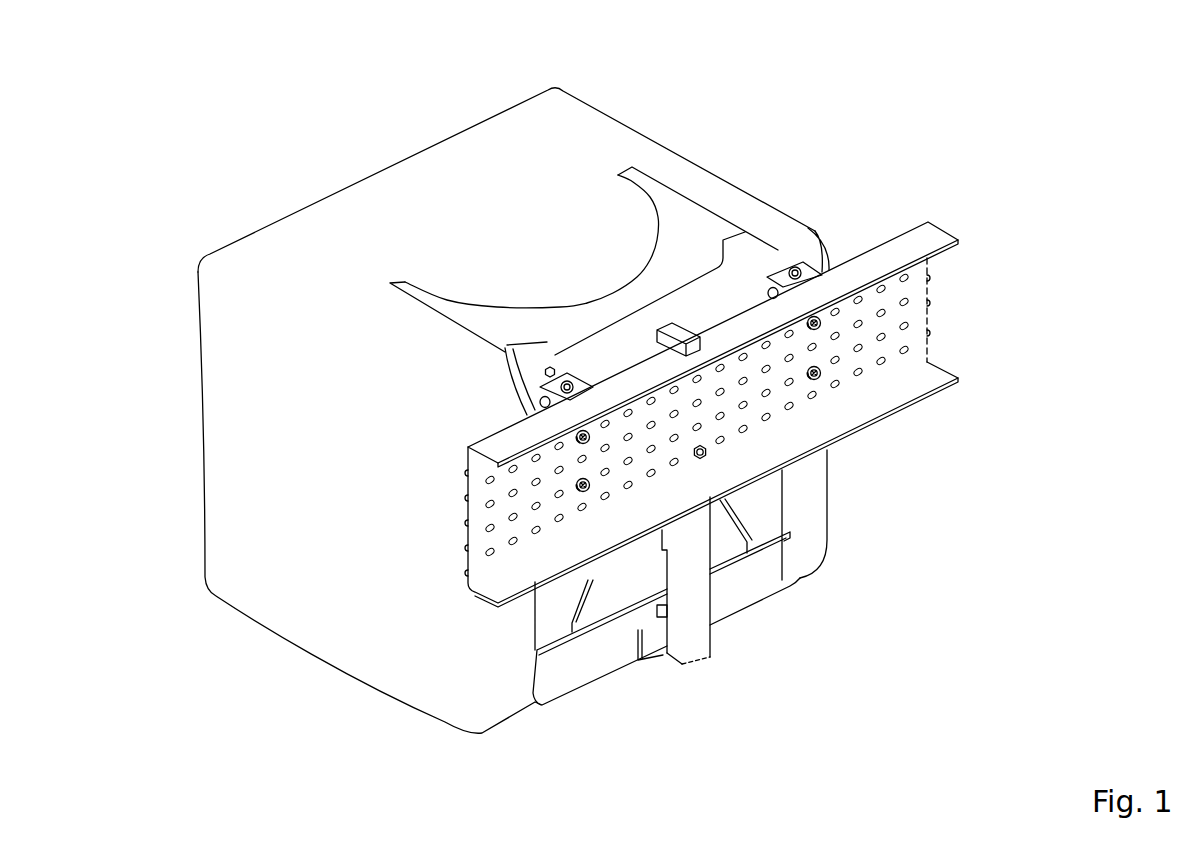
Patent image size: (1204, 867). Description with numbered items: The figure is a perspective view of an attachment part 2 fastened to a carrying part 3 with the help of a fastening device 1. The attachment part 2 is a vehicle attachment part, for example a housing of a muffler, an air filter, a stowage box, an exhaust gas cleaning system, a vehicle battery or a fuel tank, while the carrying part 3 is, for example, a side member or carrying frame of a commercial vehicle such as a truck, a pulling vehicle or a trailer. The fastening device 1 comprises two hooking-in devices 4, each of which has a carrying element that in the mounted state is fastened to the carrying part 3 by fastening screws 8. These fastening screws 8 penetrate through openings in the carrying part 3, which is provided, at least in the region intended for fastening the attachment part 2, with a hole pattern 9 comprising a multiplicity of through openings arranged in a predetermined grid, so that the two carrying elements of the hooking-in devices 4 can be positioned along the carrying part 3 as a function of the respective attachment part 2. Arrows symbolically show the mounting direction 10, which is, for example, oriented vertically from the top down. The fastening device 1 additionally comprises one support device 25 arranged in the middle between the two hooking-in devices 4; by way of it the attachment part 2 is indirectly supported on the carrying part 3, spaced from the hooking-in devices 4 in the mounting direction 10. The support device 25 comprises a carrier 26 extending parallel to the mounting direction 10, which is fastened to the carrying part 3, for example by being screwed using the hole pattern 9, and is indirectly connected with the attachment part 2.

The fastening device 1 is at (895, 198).
The attachment part 2 is at (372, 162).
The carrying part 3 is at (920, 418).
The hooking-in device 4 is at (508, 388).
The fastening screws 8 is at (822, 373).
The hole pattern 9 is at (770, 418).
The mounting direction 10 is at (568, 352).
The support device 25 is at (697, 686).
The carrier 26 is at (700, 600).